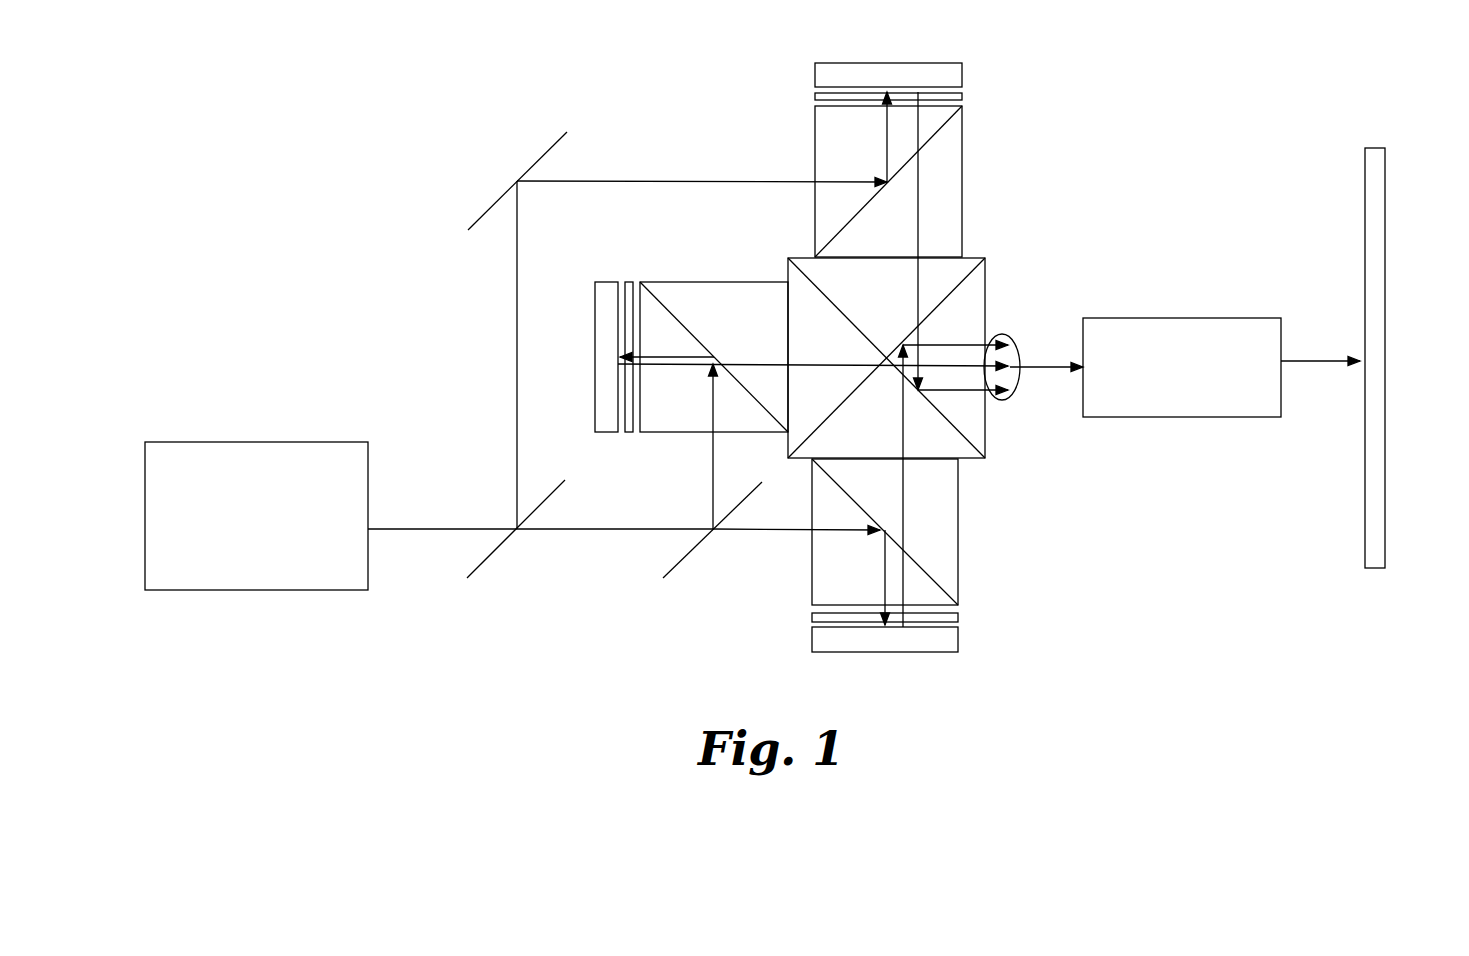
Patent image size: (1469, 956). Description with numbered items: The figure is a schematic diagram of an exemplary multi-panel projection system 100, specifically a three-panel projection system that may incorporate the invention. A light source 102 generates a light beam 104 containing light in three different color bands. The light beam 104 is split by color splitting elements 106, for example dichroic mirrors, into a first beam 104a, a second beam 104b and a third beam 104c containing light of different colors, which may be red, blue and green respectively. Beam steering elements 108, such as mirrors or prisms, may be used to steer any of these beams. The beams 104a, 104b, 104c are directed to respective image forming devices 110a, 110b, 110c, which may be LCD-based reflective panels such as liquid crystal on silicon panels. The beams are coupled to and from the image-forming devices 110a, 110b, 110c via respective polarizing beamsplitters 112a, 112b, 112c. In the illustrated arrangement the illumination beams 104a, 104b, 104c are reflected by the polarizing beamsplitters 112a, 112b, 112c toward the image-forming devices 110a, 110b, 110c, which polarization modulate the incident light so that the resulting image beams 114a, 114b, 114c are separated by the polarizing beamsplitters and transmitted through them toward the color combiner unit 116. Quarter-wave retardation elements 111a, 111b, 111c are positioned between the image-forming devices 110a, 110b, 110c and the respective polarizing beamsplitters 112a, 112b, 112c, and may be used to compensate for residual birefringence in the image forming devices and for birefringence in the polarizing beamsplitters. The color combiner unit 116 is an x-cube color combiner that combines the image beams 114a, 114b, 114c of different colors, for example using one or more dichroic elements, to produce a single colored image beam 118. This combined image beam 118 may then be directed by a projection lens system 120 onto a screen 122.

The multi-panel projection system 100 is at (315, 160).
The light source 102 is at (273, 592).
The light beam 104 is at (442, 528).
The first beam 104a is at (687, 180).
The second beam 104b is at (763, 533).
The third beam 104c is at (712, 475).
The color splitting elements 106 is at (487, 557).
The beam steering elements 108 is at (545, 152).
The first image forming device 110a is at (872, 63).
The second image forming device 110b is at (917, 653).
The third image forming device 110c is at (595, 343).
The first quarter-wave retardation element 111a is at (815, 97).
The second quarter-wave retardation element 111b is at (957, 617).
The third quarter-wave retardation element 111c is at (630, 282).
The first polarizing beamsplitter 112a is at (962, 152).
The second polarizing beamsplitter 112b is at (960, 567).
The third polarizing beamsplitter 112c is at (677, 282).
The first image beam 114a is at (918, 217).
The second image beam 114b is at (903, 498).
The third image beam 114c is at (765, 363).
The color combiner unit 116 is at (985, 298).
The colored image beam 118 is at (1040, 372).
The projection lens system 120 is at (1185, 318).
The screen 122 is at (1387, 525).